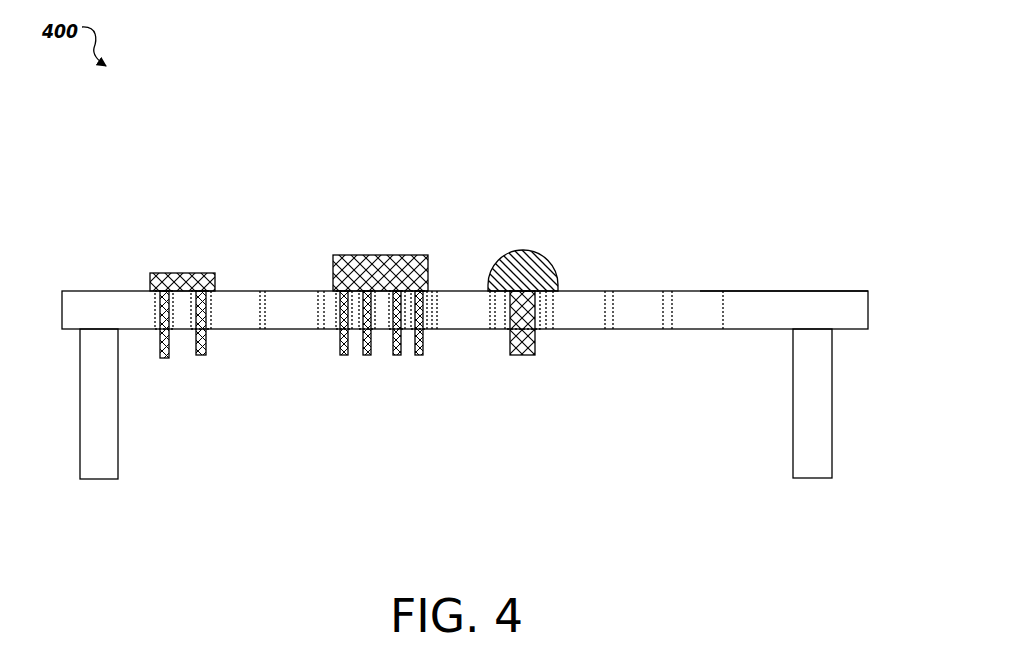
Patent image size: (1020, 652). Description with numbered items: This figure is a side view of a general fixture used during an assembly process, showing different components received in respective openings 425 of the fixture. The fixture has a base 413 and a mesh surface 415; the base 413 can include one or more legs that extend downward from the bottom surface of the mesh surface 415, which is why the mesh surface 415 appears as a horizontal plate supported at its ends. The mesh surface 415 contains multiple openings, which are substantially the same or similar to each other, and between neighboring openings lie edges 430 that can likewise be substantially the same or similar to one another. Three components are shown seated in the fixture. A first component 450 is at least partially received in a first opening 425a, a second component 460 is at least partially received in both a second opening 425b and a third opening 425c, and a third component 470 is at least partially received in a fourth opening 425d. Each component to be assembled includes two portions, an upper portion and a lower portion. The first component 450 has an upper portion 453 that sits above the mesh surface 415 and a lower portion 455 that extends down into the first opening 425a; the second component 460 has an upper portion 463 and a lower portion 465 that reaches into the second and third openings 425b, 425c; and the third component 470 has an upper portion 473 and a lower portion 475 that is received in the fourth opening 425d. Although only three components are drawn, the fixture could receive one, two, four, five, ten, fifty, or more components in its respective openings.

The base 413 is at (793, 417).
The mesh surface 415 is at (820, 290).
The openings 425 is at (688, 300).
The first opening 425a is at (180, 308).
The second opening 425b is at (353, 318).
The third opening 425c is at (407, 310).
The fourth opening 425d is at (540, 310).
The edges 430 is at (665, 318).
The first component 450 is at (194, 293).
The upper portion 453 is at (150, 283).
The lower portion 455 is at (201, 357).
The second component 460 is at (374, 318).
The upper portion 463 is at (333, 263).
The lower portion 465 is at (423, 336).
The third component 470 is at (541, 299).
The upper portion 473 is at (554, 268).
The lower portion 475 is at (521, 356).